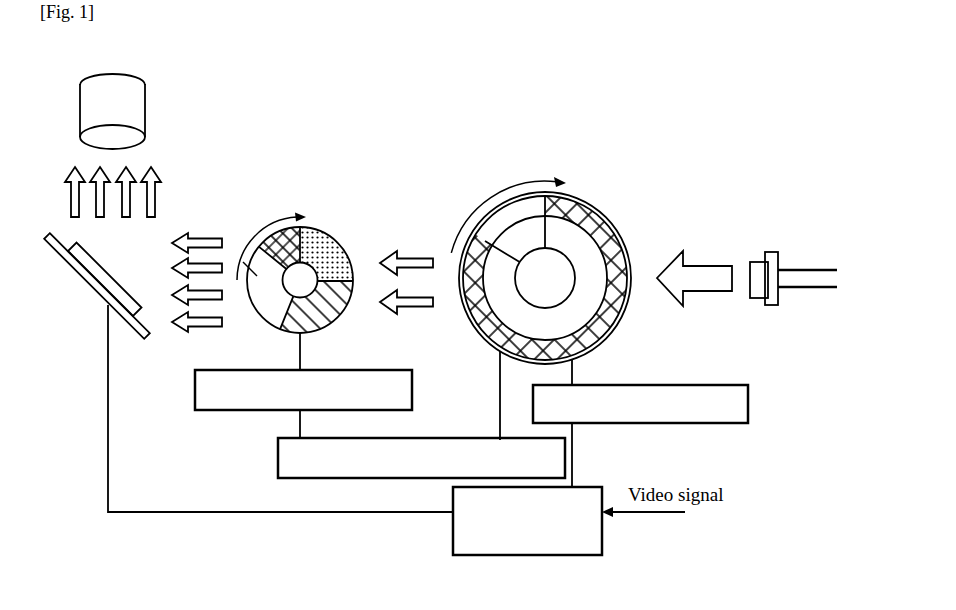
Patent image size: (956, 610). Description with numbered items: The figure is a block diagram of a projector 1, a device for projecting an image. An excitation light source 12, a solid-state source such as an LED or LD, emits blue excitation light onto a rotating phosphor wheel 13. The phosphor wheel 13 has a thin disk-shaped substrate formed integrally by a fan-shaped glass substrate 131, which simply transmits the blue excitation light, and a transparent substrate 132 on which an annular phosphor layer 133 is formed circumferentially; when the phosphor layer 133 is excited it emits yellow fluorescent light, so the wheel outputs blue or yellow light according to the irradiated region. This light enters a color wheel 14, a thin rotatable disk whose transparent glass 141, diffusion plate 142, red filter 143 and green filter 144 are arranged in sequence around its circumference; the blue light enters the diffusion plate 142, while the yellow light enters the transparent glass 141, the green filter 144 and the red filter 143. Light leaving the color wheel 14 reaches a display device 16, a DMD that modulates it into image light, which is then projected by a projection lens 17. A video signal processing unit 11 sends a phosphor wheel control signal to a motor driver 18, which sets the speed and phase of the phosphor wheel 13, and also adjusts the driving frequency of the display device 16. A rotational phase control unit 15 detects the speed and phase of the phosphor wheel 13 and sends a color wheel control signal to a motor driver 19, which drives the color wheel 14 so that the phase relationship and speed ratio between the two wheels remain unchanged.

The projector 1 is at (744, 135).
The video signal processing unit 11 is at (453, 548).
The excitation light source 12 is at (769, 300).
The phosphor wheel 13 is at (522, 307).
The glass substrate 131 is at (498, 227).
The transparent substrate 132 is at (557, 235).
The phosphor layer 133 is at (515, 211).
The color wheel 14 is at (305, 249).
The transparent glass 141 is at (247, 229).
The diffusion plate 142 is at (276, 250).
The red filter 143 is at (330, 226).
The green filter 144 is at (352, 293).
The rotational phase control unit 15 is at (278, 462).
The display device 16 is at (89, 291).
The projection lens 17 is at (145, 115).
The motor driver 18 is at (748, 405).
The motor driver 19 is at (196, 386).